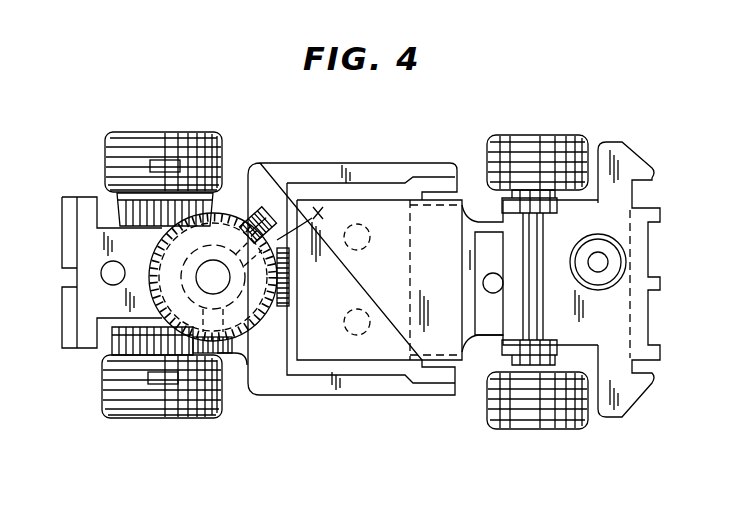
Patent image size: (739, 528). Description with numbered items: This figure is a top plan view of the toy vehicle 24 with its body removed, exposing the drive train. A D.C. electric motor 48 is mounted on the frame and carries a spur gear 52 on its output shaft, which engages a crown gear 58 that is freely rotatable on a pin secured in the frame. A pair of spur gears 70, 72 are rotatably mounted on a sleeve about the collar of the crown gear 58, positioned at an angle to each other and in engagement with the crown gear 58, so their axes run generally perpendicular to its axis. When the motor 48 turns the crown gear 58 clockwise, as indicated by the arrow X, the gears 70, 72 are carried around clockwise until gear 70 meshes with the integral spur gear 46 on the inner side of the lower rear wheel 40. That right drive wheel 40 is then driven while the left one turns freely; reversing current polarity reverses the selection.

The toy vehicle 24 is at (437, 125).
The rear wheels 40 is at (120, 145).
The spur gear 46 is at (117, 342).
The D.C. electric motor 48 is at (379, 280).
The spur gear 52 is at (280, 305).
The crown gear 58 is at (152, 243).
The spur gear 70 is at (248, 360).
The spur gear 72 is at (243, 216).